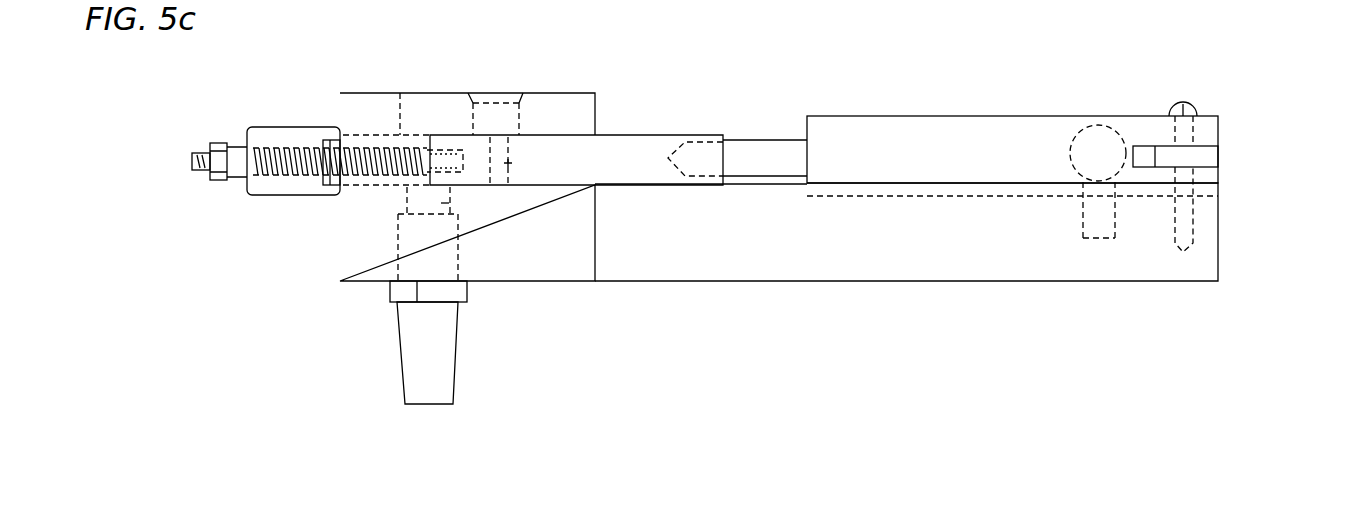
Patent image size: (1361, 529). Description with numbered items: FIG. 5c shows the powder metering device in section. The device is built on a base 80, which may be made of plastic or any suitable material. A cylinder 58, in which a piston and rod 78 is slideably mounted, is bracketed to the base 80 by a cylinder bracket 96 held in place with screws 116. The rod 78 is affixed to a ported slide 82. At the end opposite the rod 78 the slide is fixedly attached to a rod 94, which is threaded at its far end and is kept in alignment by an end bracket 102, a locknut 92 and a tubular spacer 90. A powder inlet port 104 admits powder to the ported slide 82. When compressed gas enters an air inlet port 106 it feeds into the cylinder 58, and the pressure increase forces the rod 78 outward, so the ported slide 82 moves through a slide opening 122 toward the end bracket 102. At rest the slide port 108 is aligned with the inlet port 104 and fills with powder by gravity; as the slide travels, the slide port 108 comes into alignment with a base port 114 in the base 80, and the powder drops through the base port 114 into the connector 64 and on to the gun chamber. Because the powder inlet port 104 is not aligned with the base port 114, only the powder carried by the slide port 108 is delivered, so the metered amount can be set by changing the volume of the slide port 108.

The cylinder 58 is at (922, 122).
The connector 64 is at (458, 340).
The piston and rod 78 is at (753, 155).
The base 80 is at (992, 260).
The ported slide 82 is at (650, 155).
The tubular spacer 90 is at (238, 177).
The locknut 92 is at (210, 142).
The rod 94 is at (192, 161).
The cylinder bracket 96 is at (1218, 160).
The end bracket 102 is at (303, 127).
The powder inlet port 104 is at (508, 90).
The air inlet port 106 is at (1108, 232).
The slide port 108 is at (514, 163).
The base port 114 is at (460, 212).
The screws 116 is at (1197, 112).
The slide opening 122 is at (400, 93).